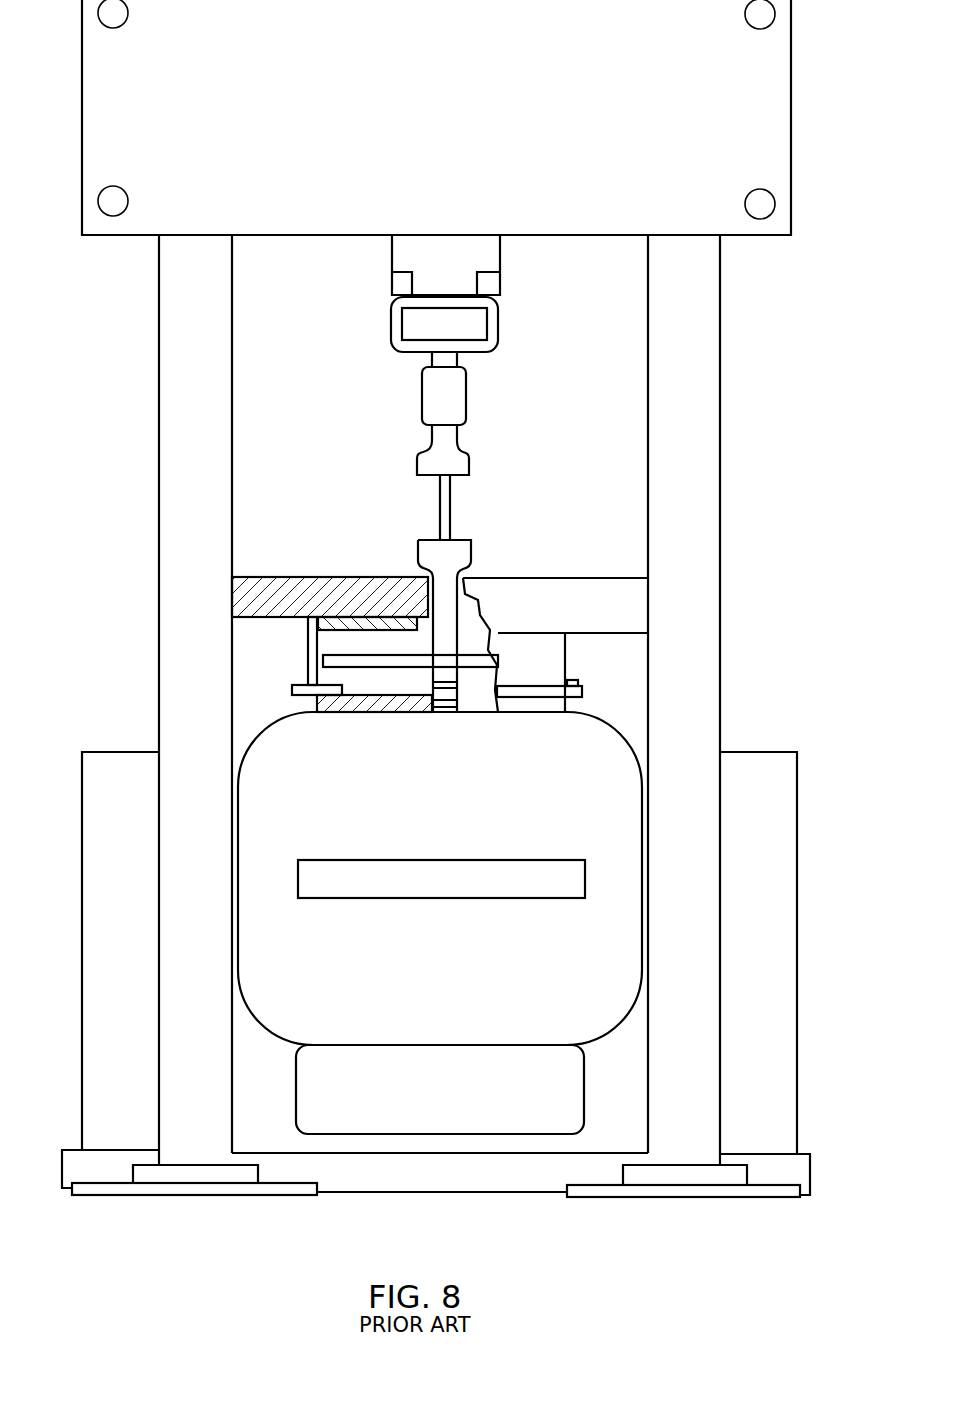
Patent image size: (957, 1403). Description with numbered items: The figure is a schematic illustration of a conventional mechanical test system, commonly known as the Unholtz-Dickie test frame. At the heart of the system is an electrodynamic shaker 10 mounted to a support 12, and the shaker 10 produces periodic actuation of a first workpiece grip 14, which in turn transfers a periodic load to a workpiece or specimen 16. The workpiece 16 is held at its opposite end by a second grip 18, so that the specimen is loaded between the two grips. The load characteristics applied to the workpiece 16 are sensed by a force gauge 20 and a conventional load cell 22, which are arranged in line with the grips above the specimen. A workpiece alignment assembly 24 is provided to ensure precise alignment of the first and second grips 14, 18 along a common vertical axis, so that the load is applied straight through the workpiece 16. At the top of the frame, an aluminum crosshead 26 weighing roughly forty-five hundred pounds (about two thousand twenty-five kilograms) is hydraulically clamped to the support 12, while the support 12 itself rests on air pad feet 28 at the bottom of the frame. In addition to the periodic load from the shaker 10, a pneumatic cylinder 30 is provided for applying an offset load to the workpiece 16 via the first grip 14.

The electrodynamic shaker 10 is at (445, 896).
The support 12 is at (648, 530).
The first workpiece grip 14 is at (472, 546).
The workpiece 16 is at (451, 506).
The second grip 18 is at (471, 462).
The force gauge 20 is at (467, 395).
The load cell 22 is at (457, 335).
The workpiece alignment assembly 24 is at (457, 272).
The aluminum crosshead 26 is at (433, 127).
The air pad feet 28 is at (660, 1200).
The pneumatic cylinder 30 is at (252, 658).